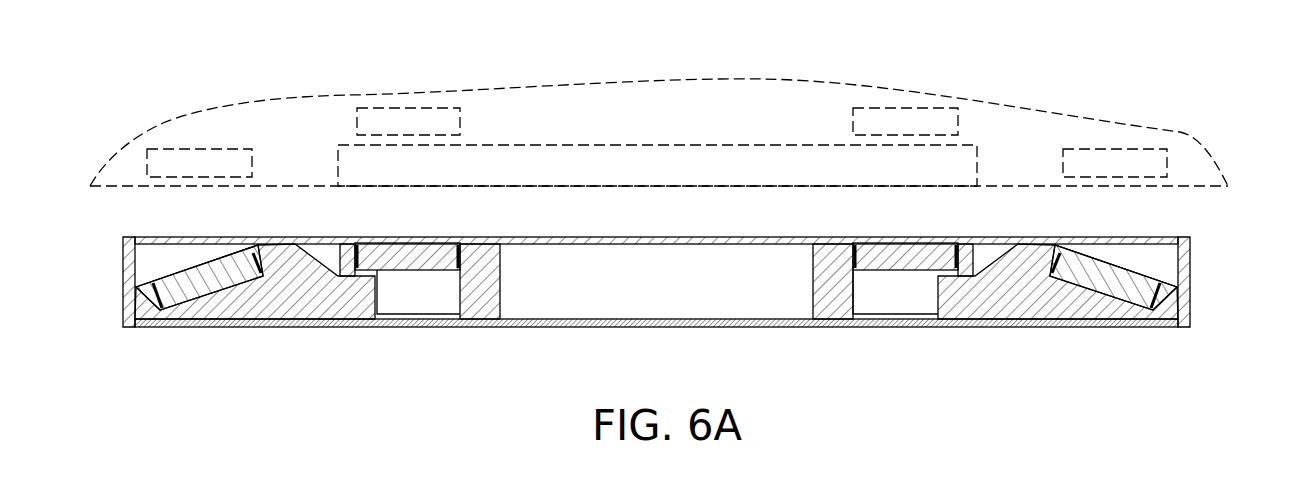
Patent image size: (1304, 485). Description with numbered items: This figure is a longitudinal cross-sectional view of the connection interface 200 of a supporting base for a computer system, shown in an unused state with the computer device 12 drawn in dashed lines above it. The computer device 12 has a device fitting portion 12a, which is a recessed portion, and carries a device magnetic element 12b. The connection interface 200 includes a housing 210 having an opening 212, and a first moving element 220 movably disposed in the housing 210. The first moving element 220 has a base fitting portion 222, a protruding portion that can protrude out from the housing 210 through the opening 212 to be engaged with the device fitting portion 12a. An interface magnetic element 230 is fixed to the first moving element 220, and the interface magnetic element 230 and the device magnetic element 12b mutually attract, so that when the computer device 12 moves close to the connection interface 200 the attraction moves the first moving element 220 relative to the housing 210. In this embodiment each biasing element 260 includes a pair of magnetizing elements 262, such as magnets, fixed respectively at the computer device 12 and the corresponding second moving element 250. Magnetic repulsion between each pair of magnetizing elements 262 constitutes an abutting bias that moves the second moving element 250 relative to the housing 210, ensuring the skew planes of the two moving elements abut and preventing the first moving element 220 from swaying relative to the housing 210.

The computer device 12 is at (663, 136).
The device fitting portion 12a is at (623, 172).
The device magnetic element 12b is at (438, 123).
The connection interface 200 is at (653, 269).
The housing 210 is at (1186, 293).
The opening 212 is at (973, 244).
The first moving element 220 is at (823, 320).
The base fitting portion 222 is at (780, 240).
The interface magnetic element 230 is at (445, 250).
The second moving element 250 is at (325, 304).
The biasing element 260 is at (653, 241).
The magnetizing element 262 is at (170, 167).